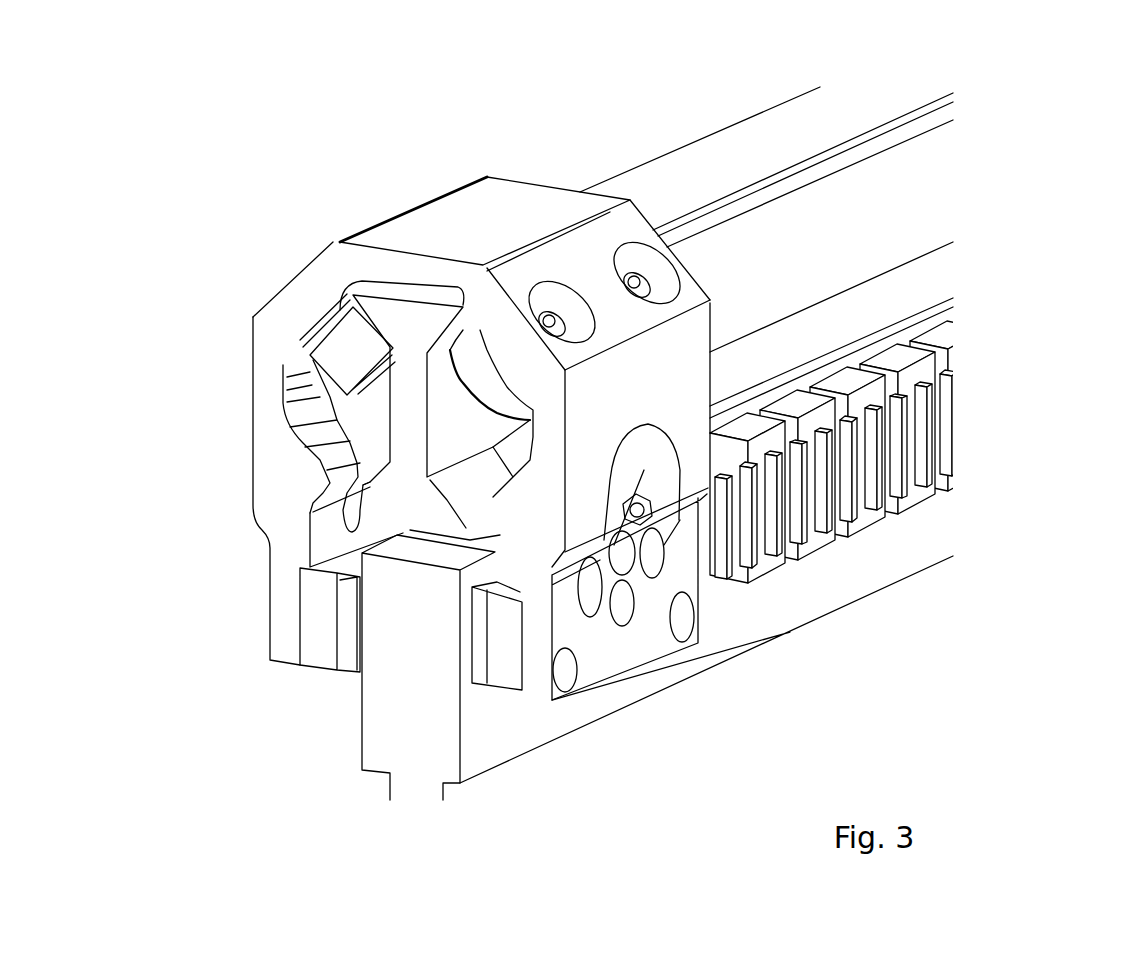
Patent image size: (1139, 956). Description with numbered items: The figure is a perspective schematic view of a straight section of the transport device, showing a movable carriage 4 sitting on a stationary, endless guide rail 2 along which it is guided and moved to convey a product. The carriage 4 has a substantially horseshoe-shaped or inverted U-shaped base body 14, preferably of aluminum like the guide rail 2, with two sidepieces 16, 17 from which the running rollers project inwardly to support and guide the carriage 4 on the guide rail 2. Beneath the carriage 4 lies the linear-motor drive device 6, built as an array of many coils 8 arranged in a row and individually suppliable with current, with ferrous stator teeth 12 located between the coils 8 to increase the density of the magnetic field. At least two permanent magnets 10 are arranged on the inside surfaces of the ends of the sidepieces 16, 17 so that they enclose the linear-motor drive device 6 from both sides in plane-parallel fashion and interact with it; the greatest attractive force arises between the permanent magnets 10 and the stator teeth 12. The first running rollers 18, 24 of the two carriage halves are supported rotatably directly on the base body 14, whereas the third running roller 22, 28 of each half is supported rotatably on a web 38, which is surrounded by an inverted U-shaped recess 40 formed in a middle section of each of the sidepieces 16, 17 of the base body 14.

The guide rail 2 is at (682, 187).
The carriage 4 is at (393, 203).
The linear-motor drive device 6 is at (410, 660).
The coils 8 is at (910, 503).
The permanent magnets 10 is at (350, 592).
The stator teeth 12 is at (943, 452).
The base body 14 is at (299, 305).
The sidepiece 16 is at (272, 398).
The sidepiece 17 is at (683, 387).
The running roller 18 is at (330, 352).
The running roller 22 is at (377, 417).
The running roller 24 is at (467, 353).
The running roller 28 is at (515, 448).
The web 38 is at (636, 440).
The recess 40 is at (657, 450).